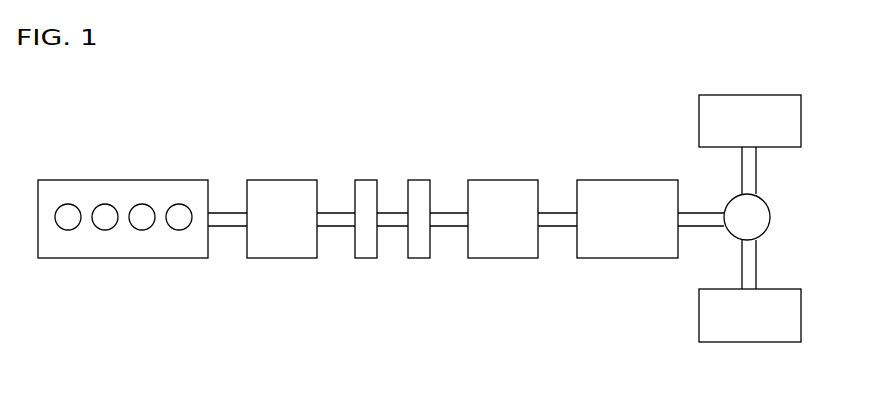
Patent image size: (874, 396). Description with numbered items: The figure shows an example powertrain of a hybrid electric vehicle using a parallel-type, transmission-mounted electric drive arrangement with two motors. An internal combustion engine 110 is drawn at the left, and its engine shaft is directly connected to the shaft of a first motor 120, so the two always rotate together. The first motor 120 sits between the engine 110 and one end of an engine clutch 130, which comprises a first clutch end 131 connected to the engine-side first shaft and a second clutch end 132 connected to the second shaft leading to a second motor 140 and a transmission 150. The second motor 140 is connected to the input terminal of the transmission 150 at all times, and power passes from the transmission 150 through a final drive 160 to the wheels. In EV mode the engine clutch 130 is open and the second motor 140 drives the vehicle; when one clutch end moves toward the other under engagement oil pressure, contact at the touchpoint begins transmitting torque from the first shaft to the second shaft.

The engine 110 is at (161, 180).
The first motor 120 is at (280, 180).
The engine clutch 130 is at (369, 276).
The first clutch end 131 is at (365, 259).
The second clutch end 132 is at (418, 259).
The second motor 140 is at (500, 180).
The transmission 150 is at (624, 180).
The final drive 160 is at (768, 198).